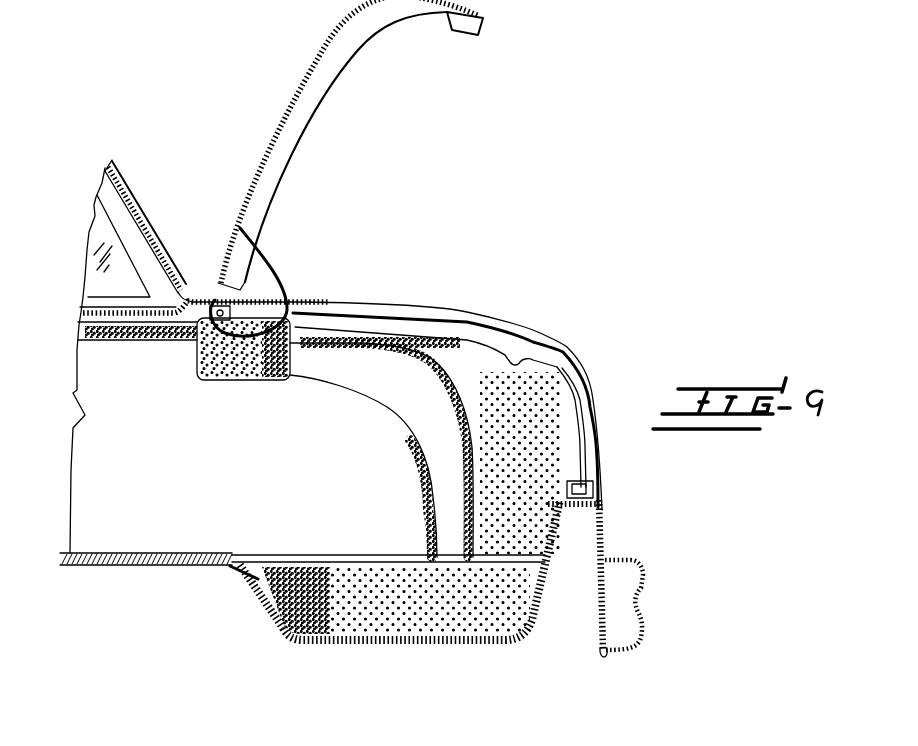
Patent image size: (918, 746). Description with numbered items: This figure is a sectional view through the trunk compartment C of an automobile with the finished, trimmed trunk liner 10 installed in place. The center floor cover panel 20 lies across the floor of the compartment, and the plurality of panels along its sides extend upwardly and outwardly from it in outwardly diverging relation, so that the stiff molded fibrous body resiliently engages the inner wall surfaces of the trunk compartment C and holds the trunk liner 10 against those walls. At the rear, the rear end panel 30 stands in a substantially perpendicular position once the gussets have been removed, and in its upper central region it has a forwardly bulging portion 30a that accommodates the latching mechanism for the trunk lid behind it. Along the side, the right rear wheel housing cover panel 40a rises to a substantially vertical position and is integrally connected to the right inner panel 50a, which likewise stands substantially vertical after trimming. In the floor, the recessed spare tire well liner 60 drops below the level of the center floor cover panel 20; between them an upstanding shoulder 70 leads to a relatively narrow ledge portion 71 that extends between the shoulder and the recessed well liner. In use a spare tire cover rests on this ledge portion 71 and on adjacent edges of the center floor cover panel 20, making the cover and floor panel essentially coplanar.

The trunk liner 10 is at (569, 332).
The center floor cover panel 20 is at (160, 540).
The rear end panel 30 is at (570, 453).
The forwardly bulging portion 30a is at (570, 518).
The right rear wheel housing cover panel 40a is at (213, 503).
The right inner panel 50a is at (487, 370).
The spare tire well liner 60 is at (500, 606).
The upstanding shoulder 70 is at (260, 557).
The ledge portion 71 is at (493, 556).
The trunk compartment C is at (387, 313).